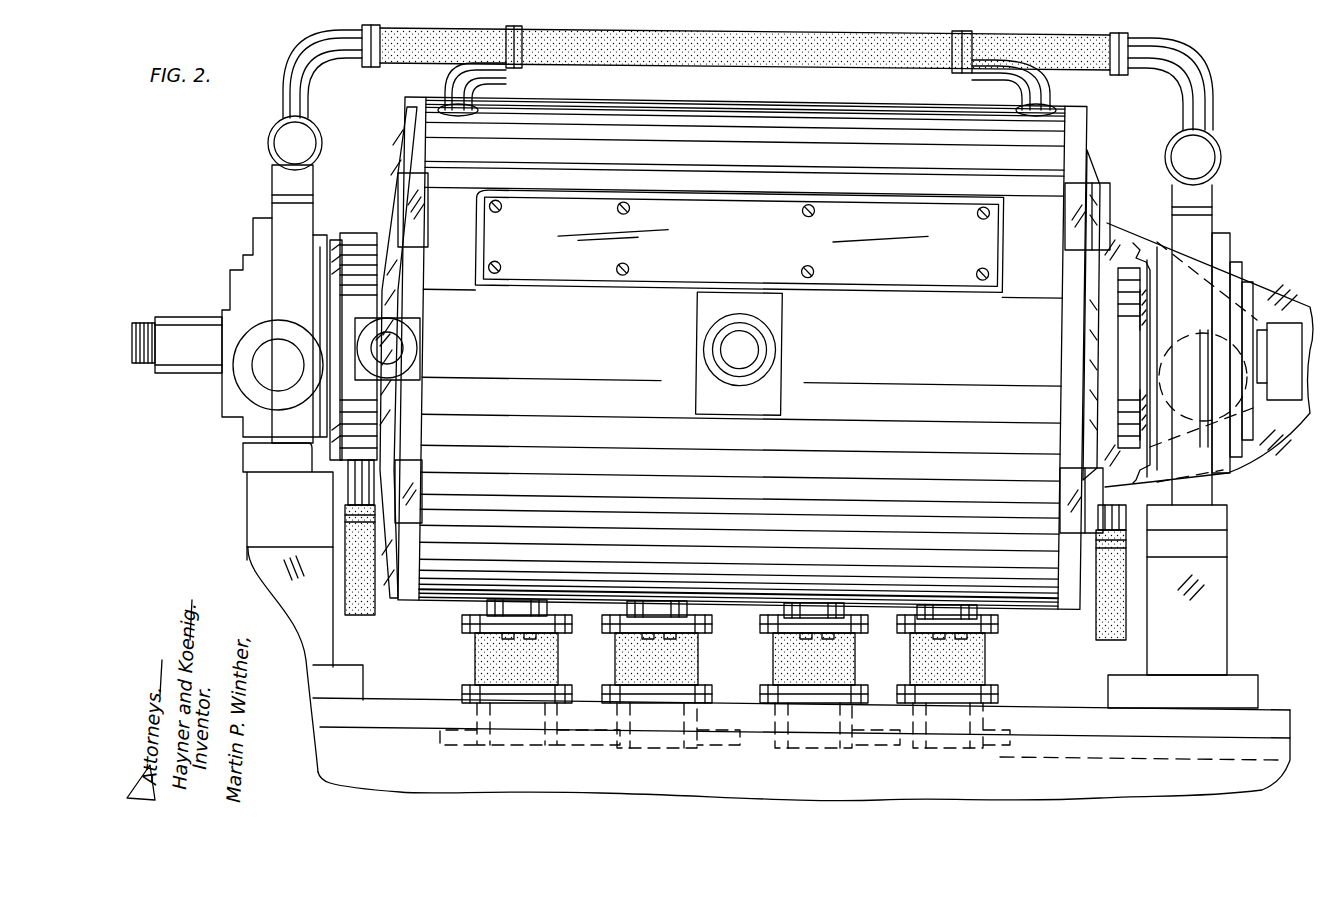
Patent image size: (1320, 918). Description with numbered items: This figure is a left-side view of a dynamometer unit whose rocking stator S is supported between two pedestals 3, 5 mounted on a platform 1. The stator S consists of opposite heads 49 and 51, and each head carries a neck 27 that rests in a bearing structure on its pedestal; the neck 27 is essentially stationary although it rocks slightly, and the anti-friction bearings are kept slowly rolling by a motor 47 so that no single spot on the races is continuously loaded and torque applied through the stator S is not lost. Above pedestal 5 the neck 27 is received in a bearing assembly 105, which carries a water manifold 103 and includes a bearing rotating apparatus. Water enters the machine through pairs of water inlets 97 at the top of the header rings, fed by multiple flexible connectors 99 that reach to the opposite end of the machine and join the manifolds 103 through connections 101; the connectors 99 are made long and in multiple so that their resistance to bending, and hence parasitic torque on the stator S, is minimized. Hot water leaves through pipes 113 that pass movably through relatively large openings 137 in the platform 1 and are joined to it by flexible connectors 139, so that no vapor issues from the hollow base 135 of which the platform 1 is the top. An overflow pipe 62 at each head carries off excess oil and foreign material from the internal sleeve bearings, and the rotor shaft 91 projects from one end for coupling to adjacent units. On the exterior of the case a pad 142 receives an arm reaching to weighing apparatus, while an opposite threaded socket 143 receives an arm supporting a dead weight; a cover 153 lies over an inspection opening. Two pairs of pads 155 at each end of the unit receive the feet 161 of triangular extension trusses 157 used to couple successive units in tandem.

The platform 1 is at (396, 708).
The pedestal 3 is at (322, 628).
The pedestal 5 is at (1218, 592).
The neck 27 is at (335, 298).
The motor 47 is at (254, 390).
The head 49 is at (414, 148).
The head 51 is at (1080, 145).
The overflow pipe 62 is at (367, 610).
The rotor shaft 91 is at (188, 330).
The water inlet 97 is at (472, 84).
The flexible connector 99 is at (412, 58).
The connection 101 is at (306, 78).
The water manifold 103 is at (282, 145).
The bearing assembly 105 is at (1224, 240).
The pipe 113 is at (626, 607).
The hollow base 135 is at (1042, 742).
The opening 137 is at (768, 716).
The flexible connector 139 is at (615, 658).
The pad 142 is at (766, 346).
The threaded socket 143 is at (395, 344).
The cover 153 is at (682, 268).
The pad 155 is at (418, 222).
The truss 157 is at (1133, 243).
The foot 161 is at (1105, 190).
The rocking stator S is at (708, 128).